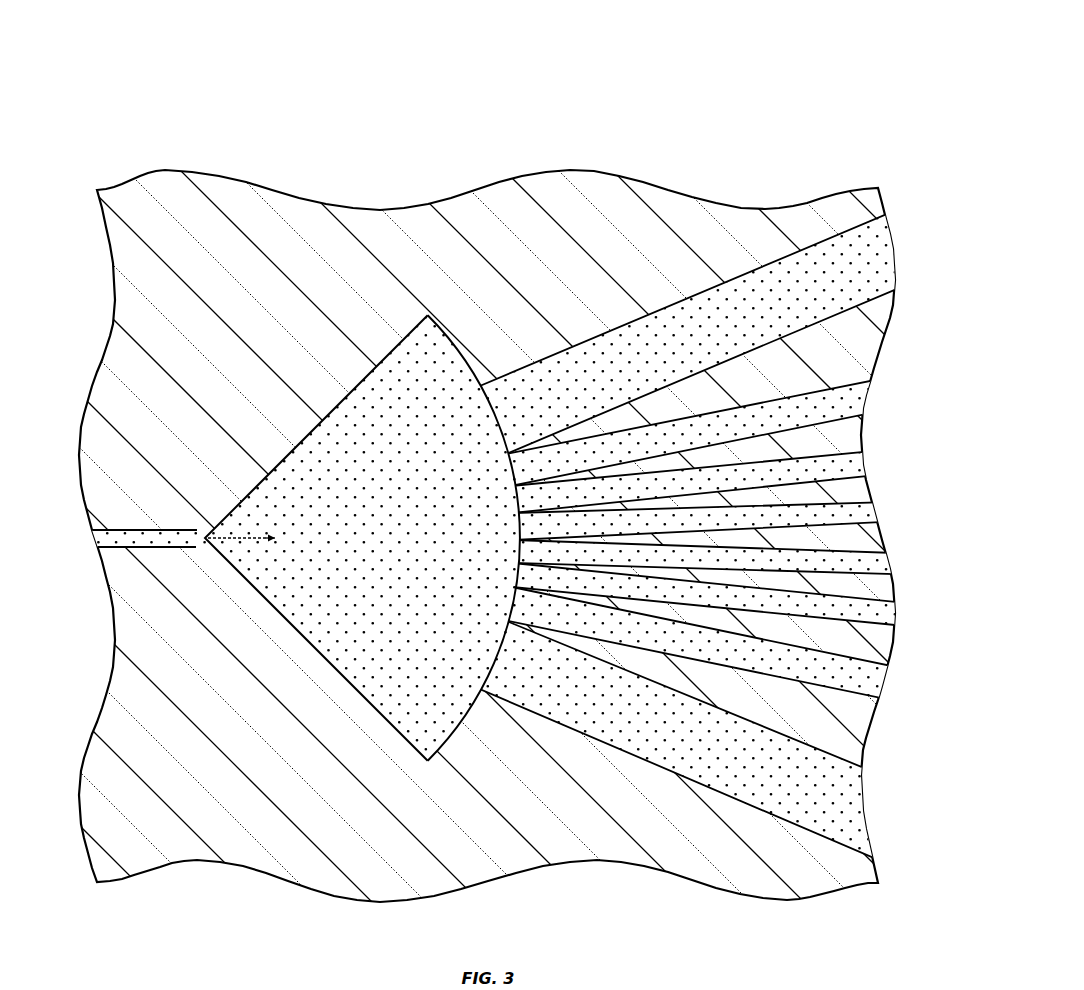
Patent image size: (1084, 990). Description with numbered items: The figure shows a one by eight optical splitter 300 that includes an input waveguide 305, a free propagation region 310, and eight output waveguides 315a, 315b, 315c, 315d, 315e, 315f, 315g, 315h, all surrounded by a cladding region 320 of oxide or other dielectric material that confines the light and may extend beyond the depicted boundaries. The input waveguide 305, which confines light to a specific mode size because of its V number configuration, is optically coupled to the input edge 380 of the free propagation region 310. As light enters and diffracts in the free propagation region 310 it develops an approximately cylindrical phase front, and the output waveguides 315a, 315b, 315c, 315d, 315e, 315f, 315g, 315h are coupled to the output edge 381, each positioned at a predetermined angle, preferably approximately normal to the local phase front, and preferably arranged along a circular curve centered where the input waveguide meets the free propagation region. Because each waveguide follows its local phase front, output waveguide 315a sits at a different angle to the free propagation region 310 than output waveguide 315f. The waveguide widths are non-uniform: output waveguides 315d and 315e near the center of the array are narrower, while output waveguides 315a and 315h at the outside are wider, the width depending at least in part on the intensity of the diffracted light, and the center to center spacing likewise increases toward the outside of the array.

The optical splitter 300 is at (500, 495).
The input waveguide 305 is at (124, 529).
The free propagation region 310 is at (457, 367).
The output waveguide 315a is at (890, 240).
The output waveguide 315b is at (862, 395).
The output waveguide 315c is at (860, 462).
The output waveguide 315d is at (866, 513).
The output waveguide 315e is at (882, 562).
The output waveguide 315f is at (894, 612).
The output waveguide 315g is at (883, 682).
The output waveguide 315h is at (850, 805).
The cladding region 320 is at (303, 213).
The input edge 380 is at (197, 516).
The output edge 381 is at (456, 742).